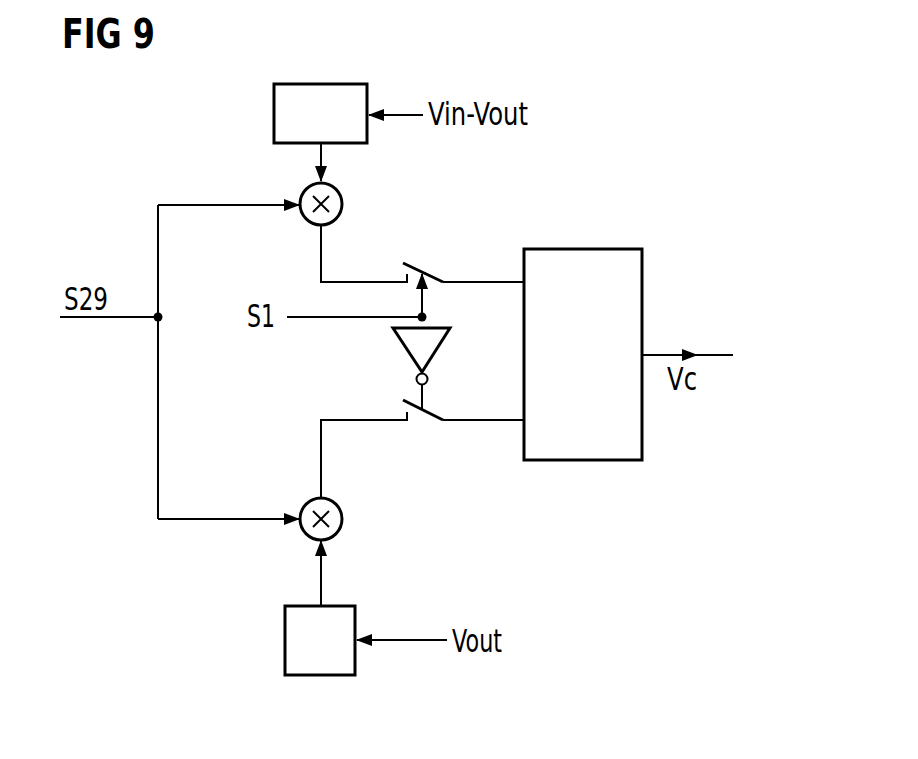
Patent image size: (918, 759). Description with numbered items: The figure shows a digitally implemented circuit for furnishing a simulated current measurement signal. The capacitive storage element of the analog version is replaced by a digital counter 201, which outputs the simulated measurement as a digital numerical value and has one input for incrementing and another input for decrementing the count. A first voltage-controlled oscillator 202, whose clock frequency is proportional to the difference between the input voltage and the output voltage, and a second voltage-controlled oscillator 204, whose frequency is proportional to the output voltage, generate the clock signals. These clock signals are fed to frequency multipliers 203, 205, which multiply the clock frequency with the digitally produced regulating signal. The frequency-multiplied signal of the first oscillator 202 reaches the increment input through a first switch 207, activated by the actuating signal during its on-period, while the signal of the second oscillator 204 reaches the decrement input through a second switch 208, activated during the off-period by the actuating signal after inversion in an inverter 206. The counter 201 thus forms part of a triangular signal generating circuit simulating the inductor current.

The digital counter 201 is at (590, 249).
The first voltage-controlled oscillator 202 is at (321, 84).
The frequency multiplier 203 is at (343, 204).
The second voltage-controlled oscillator 204 is at (285, 640).
The frequency multiplier 205 is at (343, 519).
The inverter 206 is at (440, 350).
The first switch 207 is at (433, 275).
The second switch 208 is at (428, 414).